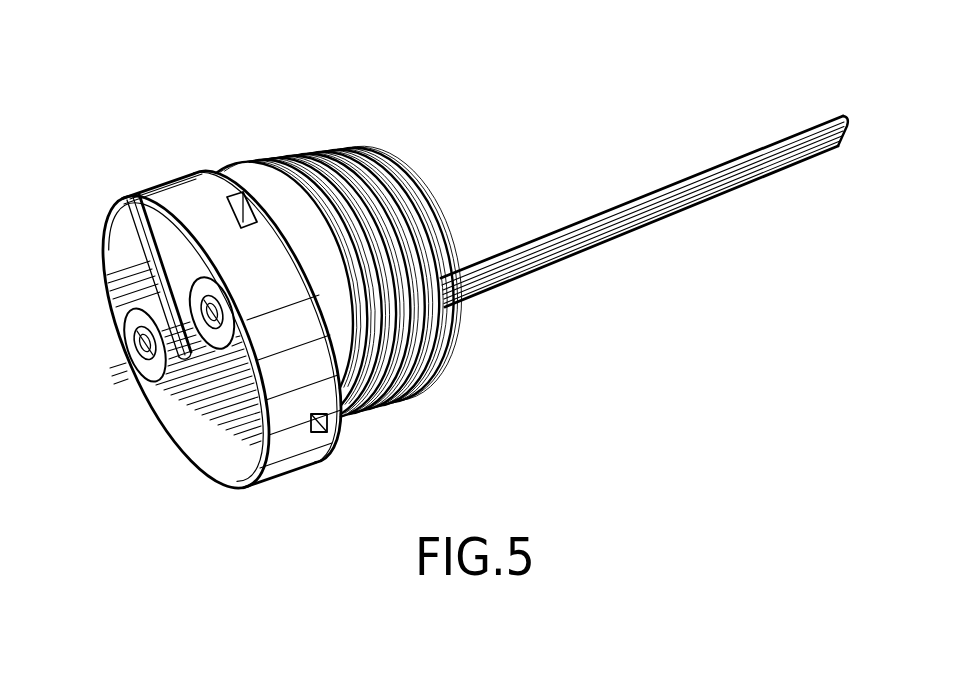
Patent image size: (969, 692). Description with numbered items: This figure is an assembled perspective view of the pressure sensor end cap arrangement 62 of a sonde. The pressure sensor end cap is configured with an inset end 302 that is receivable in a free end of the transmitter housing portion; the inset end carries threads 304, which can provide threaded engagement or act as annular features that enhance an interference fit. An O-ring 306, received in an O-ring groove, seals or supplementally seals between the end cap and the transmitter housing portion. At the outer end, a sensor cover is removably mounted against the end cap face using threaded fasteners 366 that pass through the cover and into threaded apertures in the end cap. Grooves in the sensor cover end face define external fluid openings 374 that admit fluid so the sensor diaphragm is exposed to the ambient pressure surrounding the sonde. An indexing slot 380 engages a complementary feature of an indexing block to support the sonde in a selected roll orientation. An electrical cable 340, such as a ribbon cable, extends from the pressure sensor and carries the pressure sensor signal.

The pressure sensor end cap arrangement 62 is at (512, 87).
The inset end 302 is at (377, 156).
The threads 304 is at (313, 150).
The O-ring 306 is at (341, 434).
The electrical cable 340 is at (560, 256).
The threaded fasteners 366 is at (146, 360).
The external fluid openings 374 is at (229, 196).
The indexing slot 380 is at (128, 266).